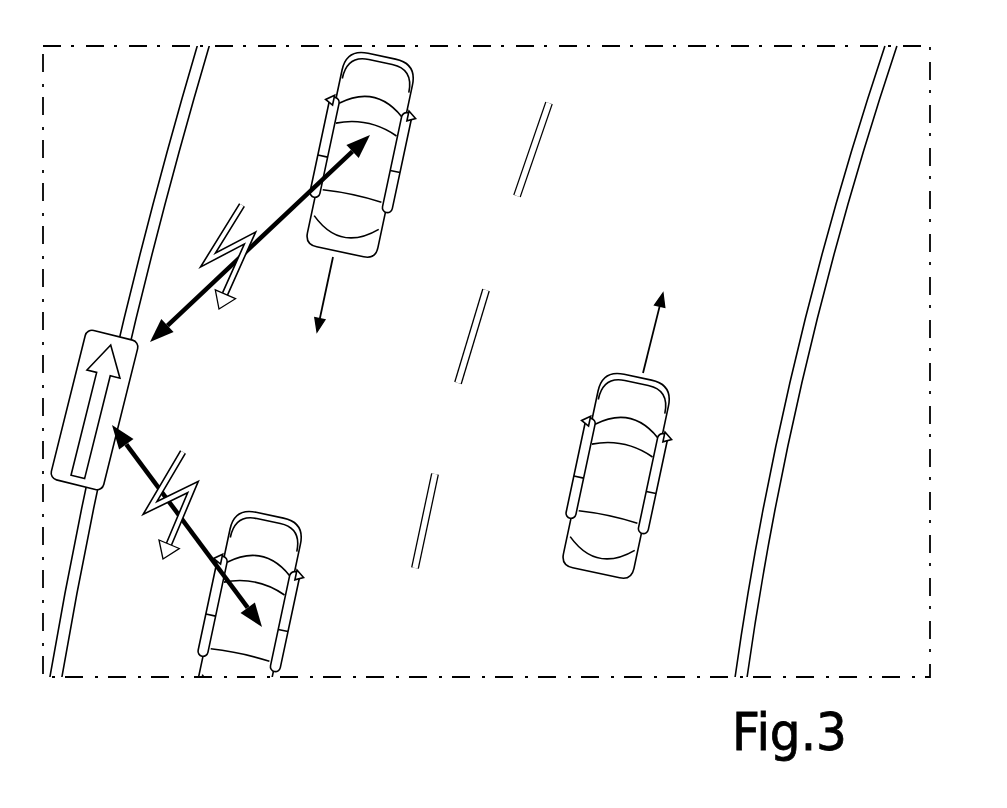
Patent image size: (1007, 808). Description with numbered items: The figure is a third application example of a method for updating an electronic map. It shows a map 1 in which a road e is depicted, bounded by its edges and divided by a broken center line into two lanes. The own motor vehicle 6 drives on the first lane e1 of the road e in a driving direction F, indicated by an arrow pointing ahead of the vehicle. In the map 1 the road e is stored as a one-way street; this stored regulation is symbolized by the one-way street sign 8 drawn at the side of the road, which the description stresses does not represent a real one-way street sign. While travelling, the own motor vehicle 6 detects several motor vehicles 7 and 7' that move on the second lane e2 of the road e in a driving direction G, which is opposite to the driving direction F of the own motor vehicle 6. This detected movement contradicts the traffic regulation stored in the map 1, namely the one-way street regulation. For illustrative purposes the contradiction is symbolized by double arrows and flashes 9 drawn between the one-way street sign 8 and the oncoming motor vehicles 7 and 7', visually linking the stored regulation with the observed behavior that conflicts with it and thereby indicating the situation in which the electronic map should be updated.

The map 1 is at (83, 98).
The own motor vehicle 6 is at (680, 420).
The motor vehicle 7 is at (296, 613).
The motor vehicle 7' is at (402, 154).
The one-way street sign 8 is at (108, 328).
The double arrows and flashes 9 is at (249, 326).
The road e is at (803, 350).
The first lane e1 is at (693, 165).
The second lane e2 is at (452, 142).
The driving direction F is at (650, 340).
The driving direction G is at (332, 287).